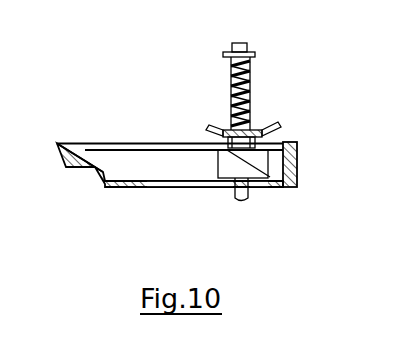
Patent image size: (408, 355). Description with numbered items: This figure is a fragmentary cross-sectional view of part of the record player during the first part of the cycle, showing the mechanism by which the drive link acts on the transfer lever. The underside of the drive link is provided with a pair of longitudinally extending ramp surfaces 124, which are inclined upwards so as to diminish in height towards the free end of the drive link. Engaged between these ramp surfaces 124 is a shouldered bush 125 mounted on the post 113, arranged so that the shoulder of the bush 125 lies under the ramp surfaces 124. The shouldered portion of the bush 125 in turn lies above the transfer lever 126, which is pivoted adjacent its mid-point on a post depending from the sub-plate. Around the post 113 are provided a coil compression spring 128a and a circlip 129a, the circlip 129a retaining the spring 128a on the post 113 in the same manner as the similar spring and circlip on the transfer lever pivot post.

The circlip 129a is at (255, 54).
The coil compression spring 128a is at (250, 74).
The transfer lever 126 is at (281, 125).
The shouldered bush 125 is at (260, 157).
The ramp surfaces 124 is at (222, 167).
The post 113 is at (248, 191).